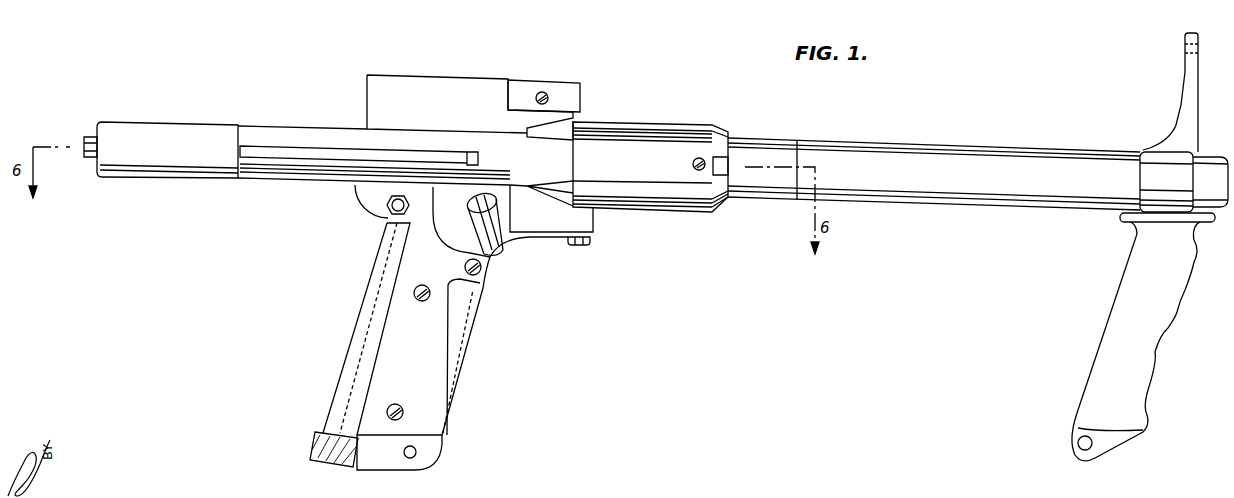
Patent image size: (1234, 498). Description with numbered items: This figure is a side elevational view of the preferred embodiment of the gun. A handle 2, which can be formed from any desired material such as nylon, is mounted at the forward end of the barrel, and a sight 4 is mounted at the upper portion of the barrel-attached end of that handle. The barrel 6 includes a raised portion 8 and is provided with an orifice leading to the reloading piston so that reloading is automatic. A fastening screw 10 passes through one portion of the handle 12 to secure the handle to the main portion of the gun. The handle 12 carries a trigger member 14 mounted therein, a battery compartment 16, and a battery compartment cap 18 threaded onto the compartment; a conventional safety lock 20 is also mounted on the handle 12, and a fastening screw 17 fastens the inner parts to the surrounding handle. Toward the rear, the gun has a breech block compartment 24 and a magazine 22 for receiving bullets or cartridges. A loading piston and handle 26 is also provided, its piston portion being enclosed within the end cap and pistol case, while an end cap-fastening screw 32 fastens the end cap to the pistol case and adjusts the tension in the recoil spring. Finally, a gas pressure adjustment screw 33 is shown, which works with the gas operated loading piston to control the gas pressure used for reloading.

The handle 2 is at (1163, 347).
The sight 4 is at (1181, 108).
The barrel 6 is at (957, 143).
The raised portion 8 is at (660, 123).
The fastening screw 10 is at (575, 246).
The handle 12 is at (345, 331).
The trigger member 14 is at (474, 322).
The battery compartment 16 is at (340, 378).
The fastening screw 17 is at (386, 208).
The battery compartment cap 18 is at (312, 443).
The safety lock 20 is at (506, 248).
The magazine 22 is at (432, 70).
The breech block compartment 24 is at (563, 90).
The loading piston and handle 26 is at (444, 147).
The end cap-fastening screw 32 is at (90, 137).
The gas pressure adjustment screw 33 is at (723, 157).